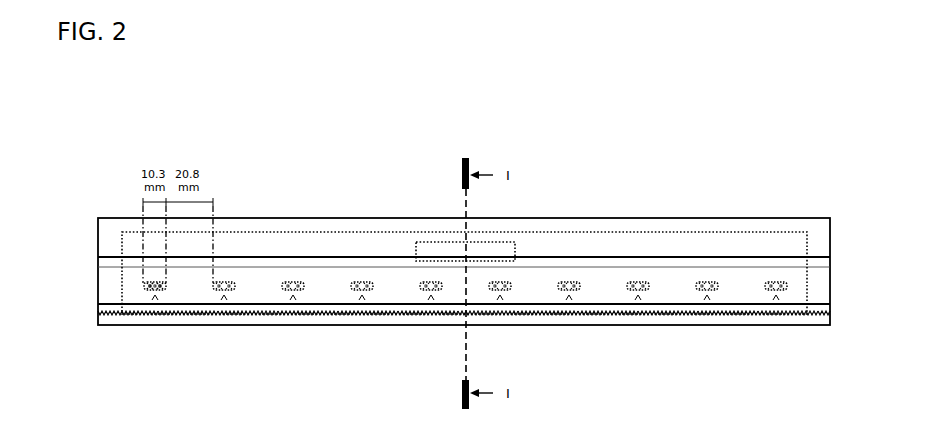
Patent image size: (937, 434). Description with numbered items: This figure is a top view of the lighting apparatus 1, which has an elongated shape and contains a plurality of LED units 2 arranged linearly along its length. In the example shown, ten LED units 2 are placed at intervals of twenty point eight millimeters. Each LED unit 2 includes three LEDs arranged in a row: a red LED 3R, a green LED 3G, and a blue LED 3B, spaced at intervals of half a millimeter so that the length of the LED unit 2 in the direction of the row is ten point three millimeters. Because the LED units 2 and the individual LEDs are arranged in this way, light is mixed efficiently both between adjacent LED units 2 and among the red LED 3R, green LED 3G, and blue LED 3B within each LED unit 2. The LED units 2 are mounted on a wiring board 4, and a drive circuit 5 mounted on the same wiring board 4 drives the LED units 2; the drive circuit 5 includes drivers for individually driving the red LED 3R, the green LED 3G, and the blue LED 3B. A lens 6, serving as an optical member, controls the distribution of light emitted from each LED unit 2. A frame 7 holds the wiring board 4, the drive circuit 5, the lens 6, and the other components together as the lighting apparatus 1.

The lighting apparatus 1 is at (316, 167).
The LED unit 2 is at (55, 374).
The red LED 3R is at (141, 292).
The green LED 3G is at (152, 292).
The blue LED 3B is at (162, 293).
The wiring board 4 is at (610, 231).
The drive circuit 5 is at (426, 240).
The lens 6 is at (822, 290).
The frame 7 is at (822, 238).